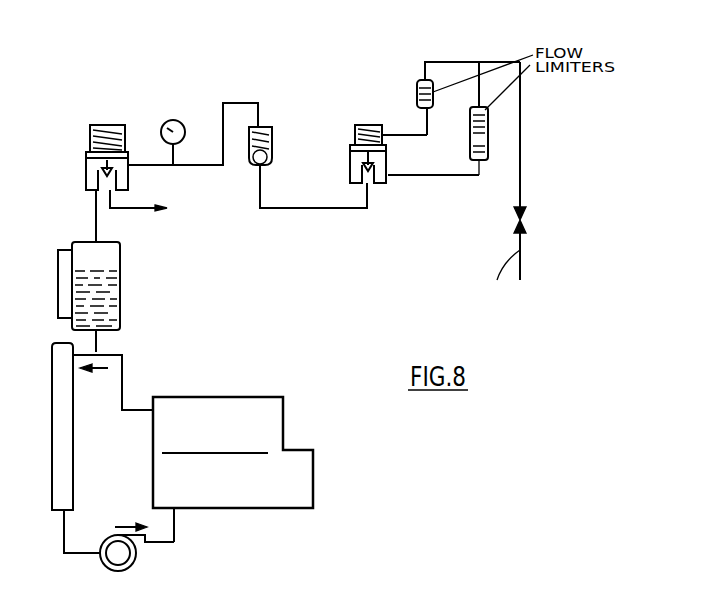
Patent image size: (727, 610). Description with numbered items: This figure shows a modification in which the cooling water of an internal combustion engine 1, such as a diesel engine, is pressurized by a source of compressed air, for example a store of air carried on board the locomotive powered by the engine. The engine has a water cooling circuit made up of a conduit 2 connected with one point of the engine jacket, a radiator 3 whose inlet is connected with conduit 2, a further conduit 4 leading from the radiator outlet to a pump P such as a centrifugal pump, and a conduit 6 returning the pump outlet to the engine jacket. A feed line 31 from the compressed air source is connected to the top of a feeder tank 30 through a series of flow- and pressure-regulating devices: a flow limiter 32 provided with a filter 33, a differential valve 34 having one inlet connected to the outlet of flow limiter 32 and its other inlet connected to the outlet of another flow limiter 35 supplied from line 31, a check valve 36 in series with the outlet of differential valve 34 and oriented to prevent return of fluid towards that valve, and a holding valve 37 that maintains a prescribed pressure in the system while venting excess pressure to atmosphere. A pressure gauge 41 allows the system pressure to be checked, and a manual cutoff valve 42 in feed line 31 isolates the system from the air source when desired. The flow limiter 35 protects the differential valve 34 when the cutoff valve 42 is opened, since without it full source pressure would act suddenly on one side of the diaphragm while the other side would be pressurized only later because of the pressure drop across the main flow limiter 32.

The internal combustion engine 1 is at (284, 395).
The conduit 2 is at (123, 388).
The radiator 3 is at (53, 432).
The conduit 4 is at (64, 554).
The conduit 6 is at (176, 531).
The pump P is at (134, 567).
The feeder tank 30 is at (120, 288).
The feed line 31 is at (526, 268).
The flow limiter 32 is at (489, 150).
The filter 33 is at (489, 115).
The differential valve 34 is at (362, 125).
The flow limiter 35 is at (417, 88).
The check valve 36 is at (273, 148).
The holding valve 37 is at (100, 125).
The pressure gauge 41 is at (176, 121).
The manual cutoff valve 42 is at (528, 218).